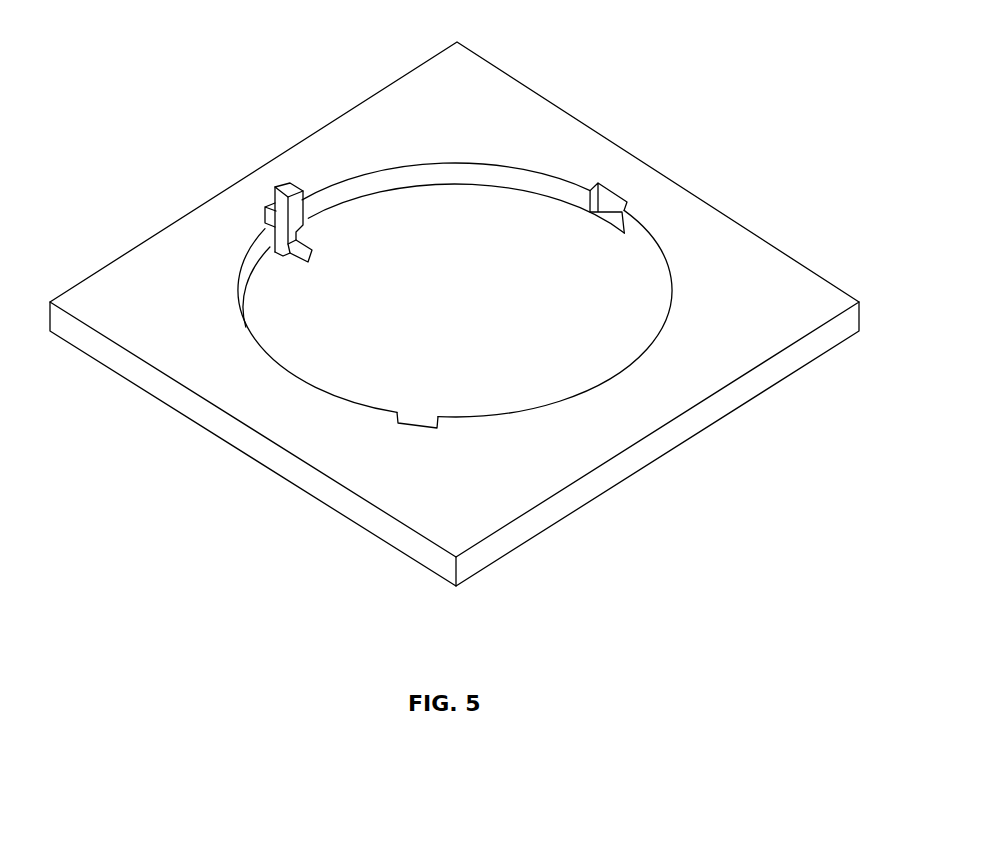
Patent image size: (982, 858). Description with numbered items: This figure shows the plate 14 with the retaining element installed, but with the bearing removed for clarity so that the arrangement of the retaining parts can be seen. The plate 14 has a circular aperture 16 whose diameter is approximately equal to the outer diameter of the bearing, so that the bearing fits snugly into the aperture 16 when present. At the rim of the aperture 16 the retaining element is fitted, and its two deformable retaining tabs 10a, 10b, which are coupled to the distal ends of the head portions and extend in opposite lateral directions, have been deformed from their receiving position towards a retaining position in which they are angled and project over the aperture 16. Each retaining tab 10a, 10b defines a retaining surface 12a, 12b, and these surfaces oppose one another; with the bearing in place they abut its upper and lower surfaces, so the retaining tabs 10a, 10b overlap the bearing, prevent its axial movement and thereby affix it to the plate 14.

The retaining tab 10a is at (278, 185).
The retaining tab 10b is at (308, 265).
The retaining surface 12a is at (275, 233).
The retaining surface 12b is at (308, 247).
The plate 14 is at (718, 252).
The aperture 16 is at (637, 318).